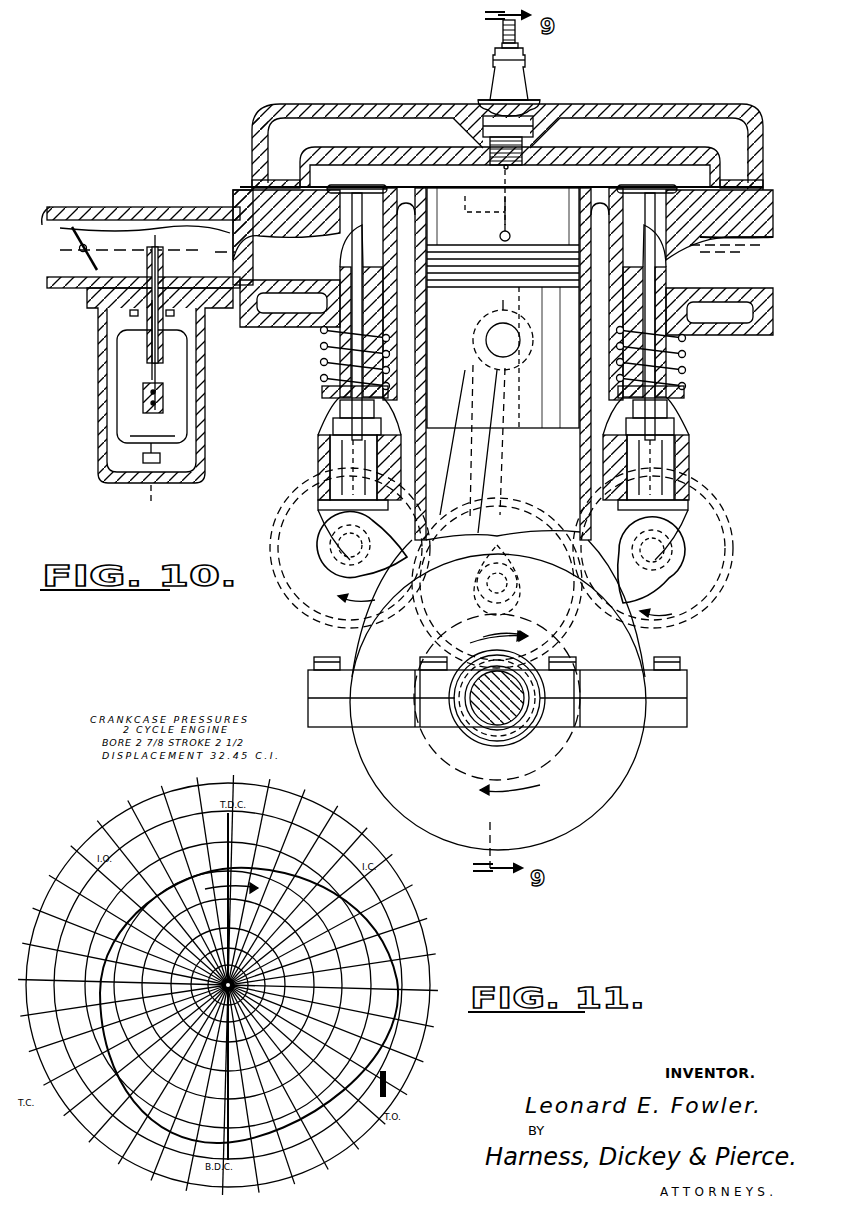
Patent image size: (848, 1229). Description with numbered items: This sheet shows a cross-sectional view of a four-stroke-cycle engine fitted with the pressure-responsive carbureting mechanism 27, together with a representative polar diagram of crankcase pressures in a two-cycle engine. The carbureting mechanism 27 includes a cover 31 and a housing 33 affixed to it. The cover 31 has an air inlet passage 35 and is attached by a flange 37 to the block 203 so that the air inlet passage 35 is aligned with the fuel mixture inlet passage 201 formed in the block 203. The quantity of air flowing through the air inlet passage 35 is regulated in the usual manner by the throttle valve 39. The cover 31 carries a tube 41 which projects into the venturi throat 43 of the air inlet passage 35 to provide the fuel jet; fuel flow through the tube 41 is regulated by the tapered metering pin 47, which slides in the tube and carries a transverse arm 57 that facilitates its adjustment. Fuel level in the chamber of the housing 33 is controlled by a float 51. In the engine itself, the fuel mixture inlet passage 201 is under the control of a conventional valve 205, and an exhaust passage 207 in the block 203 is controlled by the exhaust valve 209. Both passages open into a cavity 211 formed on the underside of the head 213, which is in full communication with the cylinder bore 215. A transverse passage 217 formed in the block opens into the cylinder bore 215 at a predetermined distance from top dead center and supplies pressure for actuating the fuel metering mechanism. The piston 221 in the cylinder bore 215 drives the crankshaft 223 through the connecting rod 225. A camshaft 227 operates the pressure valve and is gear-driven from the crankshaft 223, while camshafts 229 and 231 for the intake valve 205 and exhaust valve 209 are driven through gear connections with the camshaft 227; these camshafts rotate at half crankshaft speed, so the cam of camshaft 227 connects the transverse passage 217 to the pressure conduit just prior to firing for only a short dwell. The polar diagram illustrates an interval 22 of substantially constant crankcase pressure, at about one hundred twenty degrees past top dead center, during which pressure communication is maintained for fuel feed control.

In FIG. 10, the carbureting mechanism 27 is at (90, 210).
In FIG. 10, the cover 31 is at (90, 300).
In FIG. 10, the housing 33 is at (165, 390).
In FIG. 10, the air inlet passage 35 is at (50, 207).
In FIG. 10, the flange 37 is at (238, 205).
In FIG. 10, the throttle valve 39 is at (92, 240).
In FIG. 10, the tube 41 is at (165, 262).
In FIG. 10, the venturi throat 43 is at (178, 236).
In FIG. 10, the metering pin 47 is at (160, 350).
In FIG. 10, the float 51 is at (152, 386).
In FIG. 10, the transverse arm 57 is at (165, 403).
In FIG. 10, the fuel mixture inlet passage 201 is at (278, 222).
In FIG. 10, the block 203 is at (318, 332).
In FIG. 10, the valve 205 is at (372, 190).
In FIG. 10, the exhaust passage 207 is at (775, 240).
In FIG. 10, the exhaust valve 209 is at (706, 256).
In FIG. 10, the cavity 211 is at (555, 189).
In FIG. 10, the head 213 is at (670, 116).
In FIG. 10, the cylinder bore 215 is at (583, 232).
In FIG. 10, the transverse passage 217 is at (506, 230).
In FIG. 10, the piston 221 is at (552, 396).
In FIG. 10, the crankshaft 223 is at (505, 722).
In FIG. 10, the connecting rod 225 is at (487, 476).
In FIG. 10, the camshaft 227 is at (515, 590).
In FIG. 10, the camshaft 229 is at (335, 572).
In FIG. 10, the camshaft 231 is at (660, 578).
In FIG. 11, the interval 22 is at (390, 1096).